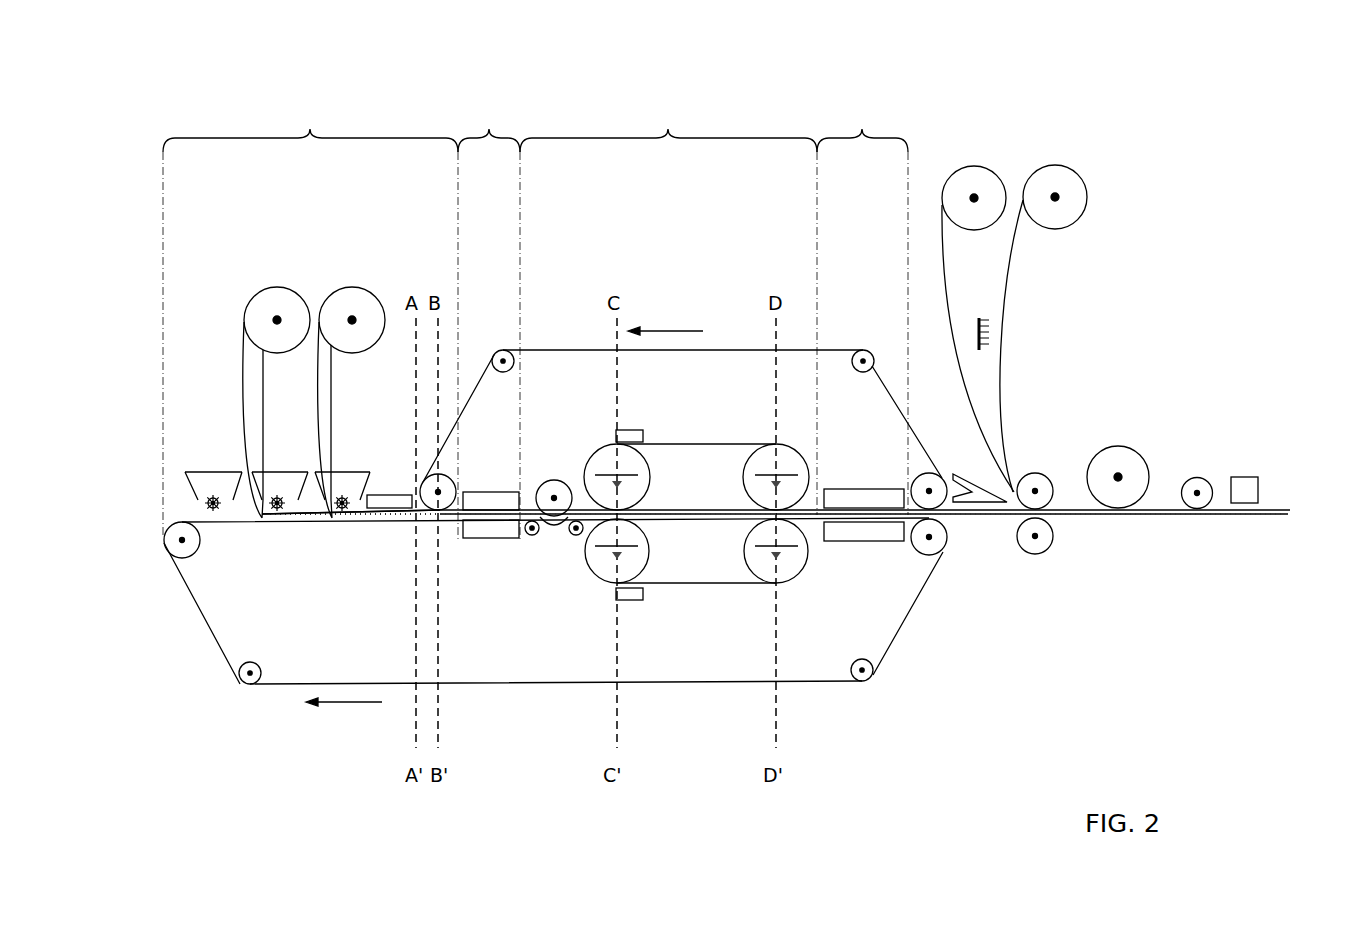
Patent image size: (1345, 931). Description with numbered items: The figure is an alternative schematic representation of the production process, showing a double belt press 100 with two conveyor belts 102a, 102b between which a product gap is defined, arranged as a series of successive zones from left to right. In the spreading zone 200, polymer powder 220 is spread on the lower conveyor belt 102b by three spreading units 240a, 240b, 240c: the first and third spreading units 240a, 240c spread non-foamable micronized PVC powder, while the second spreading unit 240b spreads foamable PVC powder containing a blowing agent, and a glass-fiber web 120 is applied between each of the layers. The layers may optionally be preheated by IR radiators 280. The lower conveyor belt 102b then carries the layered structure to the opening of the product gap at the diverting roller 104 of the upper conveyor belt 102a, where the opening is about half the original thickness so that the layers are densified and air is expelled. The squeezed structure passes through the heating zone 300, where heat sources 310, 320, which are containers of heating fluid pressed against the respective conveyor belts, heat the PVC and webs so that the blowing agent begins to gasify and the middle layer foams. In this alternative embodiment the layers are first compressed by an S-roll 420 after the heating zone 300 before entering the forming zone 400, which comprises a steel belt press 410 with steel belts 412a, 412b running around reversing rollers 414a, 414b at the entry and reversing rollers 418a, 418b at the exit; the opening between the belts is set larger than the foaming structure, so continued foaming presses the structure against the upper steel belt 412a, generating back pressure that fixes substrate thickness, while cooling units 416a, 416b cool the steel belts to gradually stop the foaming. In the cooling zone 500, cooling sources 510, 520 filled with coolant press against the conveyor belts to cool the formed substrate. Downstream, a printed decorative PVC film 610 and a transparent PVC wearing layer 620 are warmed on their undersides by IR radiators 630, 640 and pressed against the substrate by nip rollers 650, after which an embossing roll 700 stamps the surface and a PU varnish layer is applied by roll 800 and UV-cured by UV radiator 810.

The double belt press 100 is at (945, 140).
The upper conveyor belt 102a is at (746, 348).
The lower conveyor belt 102b is at (668, 683).
The diverting roller 104 is at (422, 483).
The glass-fiber web 120 is at (308, 408).
The spreading zone 200 is at (310, 318).
The polymer powder 220 is at (370, 502).
The first spreading unit 240a is at (208, 481).
The second spreading unit 240b is at (275, 492).
The third spreading unit 240c is at (340, 492).
The IR radiators 280 is at (388, 502).
The heating zone 300 is at (489, 318).
The heat source 310 is at (473, 498).
The heat source 320 is at (480, 532).
The forming zone 400 is at (668, 305).
The steel belt press 410 is at (723, 479).
The upper steel belt 412a is at (685, 445).
The lower steel belt 412b is at (695, 583).
The reversing roller 414a is at (617, 477).
The reversing roller 414b is at (617, 551).
The cooling unit 416a is at (632, 436).
The cooling unit 416b is at (627, 598).
The reversing roller 418a is at (776, 477).
The reversing roller 418b is at (776, 551).
The S-roll 420 is at (552, 474).
The cooling zone 500 is at (862, 305).
The cooling source 510 is at (887, 497).
The cooling source 520 is at (843, 533).
The decorative PVC film 610 is at (938, 240).
The transparent PVC wearing layer 620 is at (1007, 278).
The IR radiator 630 is at (982, 496).
The IR radiator 640 is at (985, 345).
The nip rollers 650 is at (1037, 483).
The embossing roll 700 is at (1118, 460).
The roll 800 is at (1197, 480).
The UV radiator 810 is at (1247, 490).